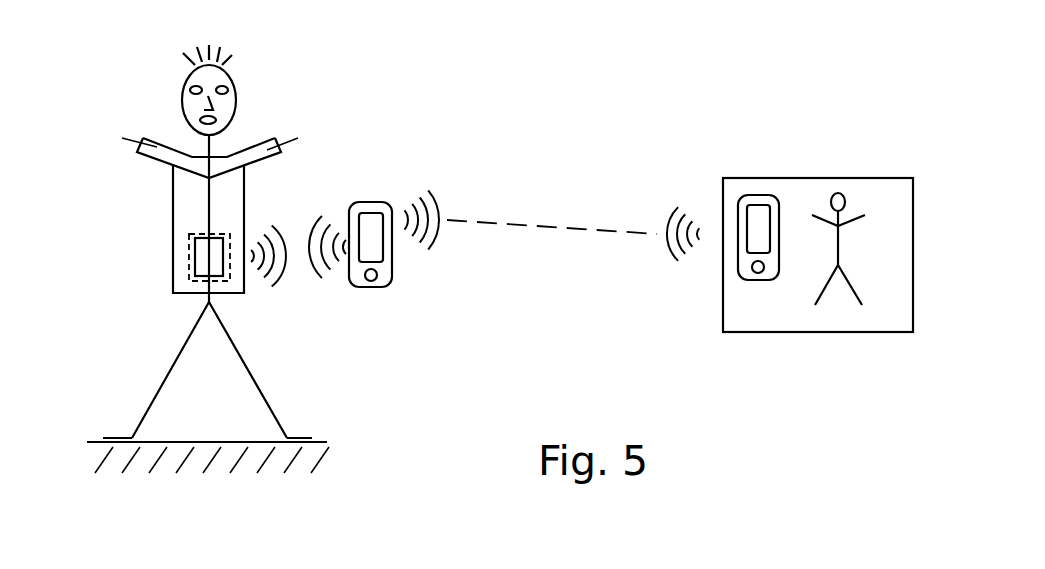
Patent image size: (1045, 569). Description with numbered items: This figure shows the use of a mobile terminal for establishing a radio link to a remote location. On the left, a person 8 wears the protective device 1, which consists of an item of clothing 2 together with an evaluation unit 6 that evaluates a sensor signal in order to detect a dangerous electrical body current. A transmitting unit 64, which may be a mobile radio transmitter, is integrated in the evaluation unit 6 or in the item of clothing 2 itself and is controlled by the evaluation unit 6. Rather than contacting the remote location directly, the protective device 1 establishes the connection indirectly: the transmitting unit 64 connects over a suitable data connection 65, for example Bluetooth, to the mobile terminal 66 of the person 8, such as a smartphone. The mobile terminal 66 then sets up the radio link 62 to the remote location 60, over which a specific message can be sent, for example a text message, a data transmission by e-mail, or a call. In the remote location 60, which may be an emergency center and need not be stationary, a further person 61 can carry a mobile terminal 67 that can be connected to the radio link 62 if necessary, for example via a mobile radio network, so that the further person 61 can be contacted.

The protective device 1 is at (147, 185).
The item of clothing 2 is at (160, 143).
The person 8 is at (252, 75).
The evaluation unit 6 is at (188, 245).
The transmitting unit 64 is at (195, 255).
The data connection 65 is at (298, 252).
The mobile terminal 66 is at (383, 288).
The radio link 62 is at (438, 202).
The remote location 60 is at (892, 177).
The mobile terminal 67 is at (758, 198).
The further person 61 is at (825, 285).